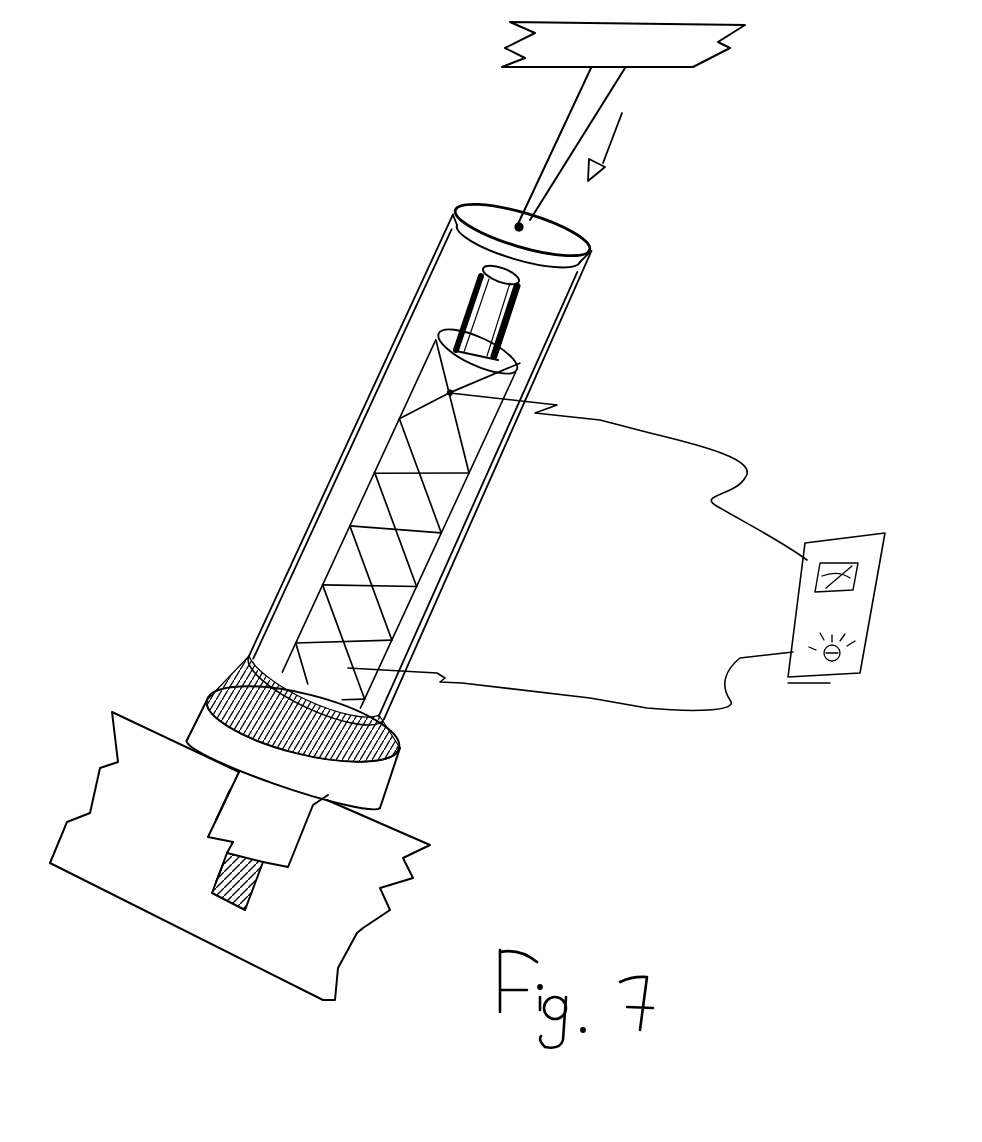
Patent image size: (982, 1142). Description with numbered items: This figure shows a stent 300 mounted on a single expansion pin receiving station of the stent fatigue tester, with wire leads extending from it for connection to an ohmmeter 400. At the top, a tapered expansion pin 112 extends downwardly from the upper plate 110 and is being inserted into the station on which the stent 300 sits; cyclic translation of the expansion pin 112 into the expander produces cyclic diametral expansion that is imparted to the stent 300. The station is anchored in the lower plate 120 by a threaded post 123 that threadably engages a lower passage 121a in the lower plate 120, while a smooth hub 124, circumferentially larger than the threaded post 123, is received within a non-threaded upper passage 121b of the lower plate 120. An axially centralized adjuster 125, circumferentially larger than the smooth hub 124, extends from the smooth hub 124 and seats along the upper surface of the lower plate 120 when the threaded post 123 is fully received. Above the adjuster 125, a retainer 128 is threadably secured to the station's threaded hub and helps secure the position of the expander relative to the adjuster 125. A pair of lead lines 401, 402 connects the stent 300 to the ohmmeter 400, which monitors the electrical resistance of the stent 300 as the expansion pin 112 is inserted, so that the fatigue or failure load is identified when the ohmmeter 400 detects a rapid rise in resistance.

The upper plate 110 is at (585, 37).
The tapered expansion pin 112 is at (562, 143).
The retainer 128 is at (588, 248).
The stent 300 is at (364, 470).
The lead line 402 is at (628, 476).
The lead line 401 is at (570, 681).
The ohmmeter 400 is at (830, 685).
The adjuster 125 is at (367, 787).
The smooth hub 124 is at (273, 828).
The threaded post 123 is at (268, 890).
The lower plate 120 is at (122, 849).
The upper passage 121b is at (220, 803).
The lower passage 121a is at (208, 891).